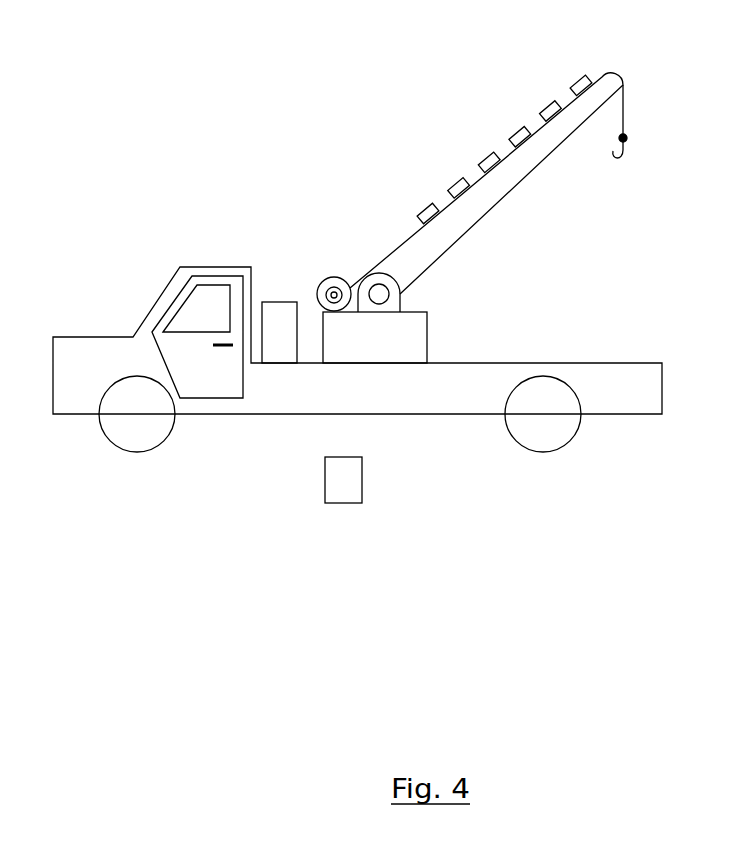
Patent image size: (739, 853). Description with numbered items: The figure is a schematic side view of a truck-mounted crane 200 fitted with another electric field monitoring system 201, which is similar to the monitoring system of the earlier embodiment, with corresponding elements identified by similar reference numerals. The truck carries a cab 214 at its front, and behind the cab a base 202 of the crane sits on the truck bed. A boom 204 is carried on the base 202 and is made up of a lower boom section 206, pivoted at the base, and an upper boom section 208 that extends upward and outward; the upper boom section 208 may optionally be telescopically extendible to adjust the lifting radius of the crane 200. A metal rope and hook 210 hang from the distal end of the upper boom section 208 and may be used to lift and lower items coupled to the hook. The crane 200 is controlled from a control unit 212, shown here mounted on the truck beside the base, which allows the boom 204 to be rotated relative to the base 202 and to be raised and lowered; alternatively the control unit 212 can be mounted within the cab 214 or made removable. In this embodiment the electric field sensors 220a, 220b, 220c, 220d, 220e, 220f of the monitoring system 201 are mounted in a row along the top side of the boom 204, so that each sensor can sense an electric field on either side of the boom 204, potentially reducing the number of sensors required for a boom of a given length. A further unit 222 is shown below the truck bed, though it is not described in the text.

The crane 200 is at (367, 260).
The electric field monitoring system 201 is at (482, 190).
The base 202 is at (273, 441).
The crane boom 204 is at (513, 233).
The lower boom section 206 is at (397, 224).
The upper boom section 208 is at (498, 120).
The metal rope and hook 210 is at (628, 138).
The control unit 212 is at (282, 302).
The cab 214 is at (172, 297).
The electric field sensor 220a is at (430, 203).
The electric field sensor 220b is at (461, 176).
The electric field sensor 220c is at (492, 148).
The electric field sensor 220d is at (524, 123).
The electric field sensor 220e is at (555, 95).
The electric field sensor 220f is at (579, 72).
The remote unit / box 222 is at (350, 480).